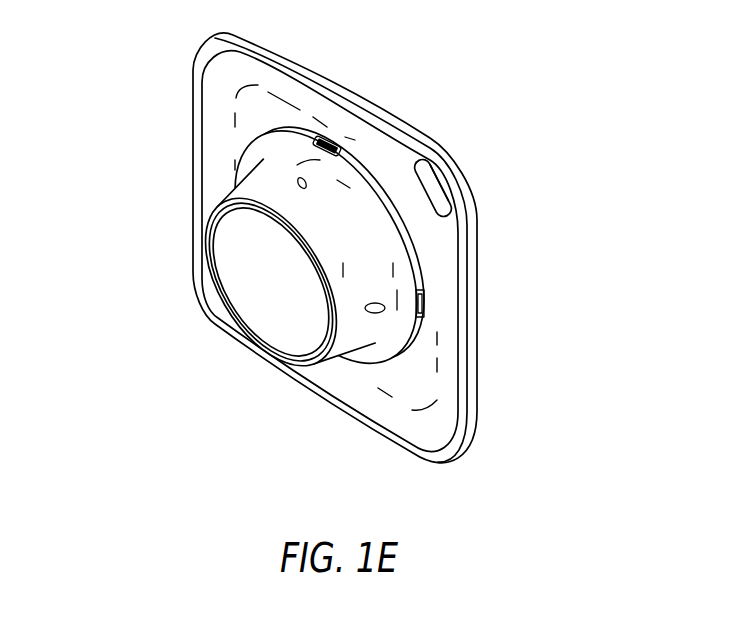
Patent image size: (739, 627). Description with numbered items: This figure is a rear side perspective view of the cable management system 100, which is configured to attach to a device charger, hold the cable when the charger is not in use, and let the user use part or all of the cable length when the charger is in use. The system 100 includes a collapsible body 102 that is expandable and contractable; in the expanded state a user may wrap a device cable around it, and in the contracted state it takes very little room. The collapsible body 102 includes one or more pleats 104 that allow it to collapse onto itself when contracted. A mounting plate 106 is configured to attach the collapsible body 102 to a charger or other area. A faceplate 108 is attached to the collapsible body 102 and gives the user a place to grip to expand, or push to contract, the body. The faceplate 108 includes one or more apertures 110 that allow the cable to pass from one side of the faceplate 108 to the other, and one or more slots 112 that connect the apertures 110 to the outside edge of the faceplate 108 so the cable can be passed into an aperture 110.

The cable management system 100 is at (318, 245).
The collapsible body 102 is at (267, 180).
The pleats 104 is at (380, 362).
The mounting plate 106 is at (223, 253).
The faceplate 108 is at (453, 307).
The apertures 110 is at (430, 168).
The slots 112 is at (448, 178).